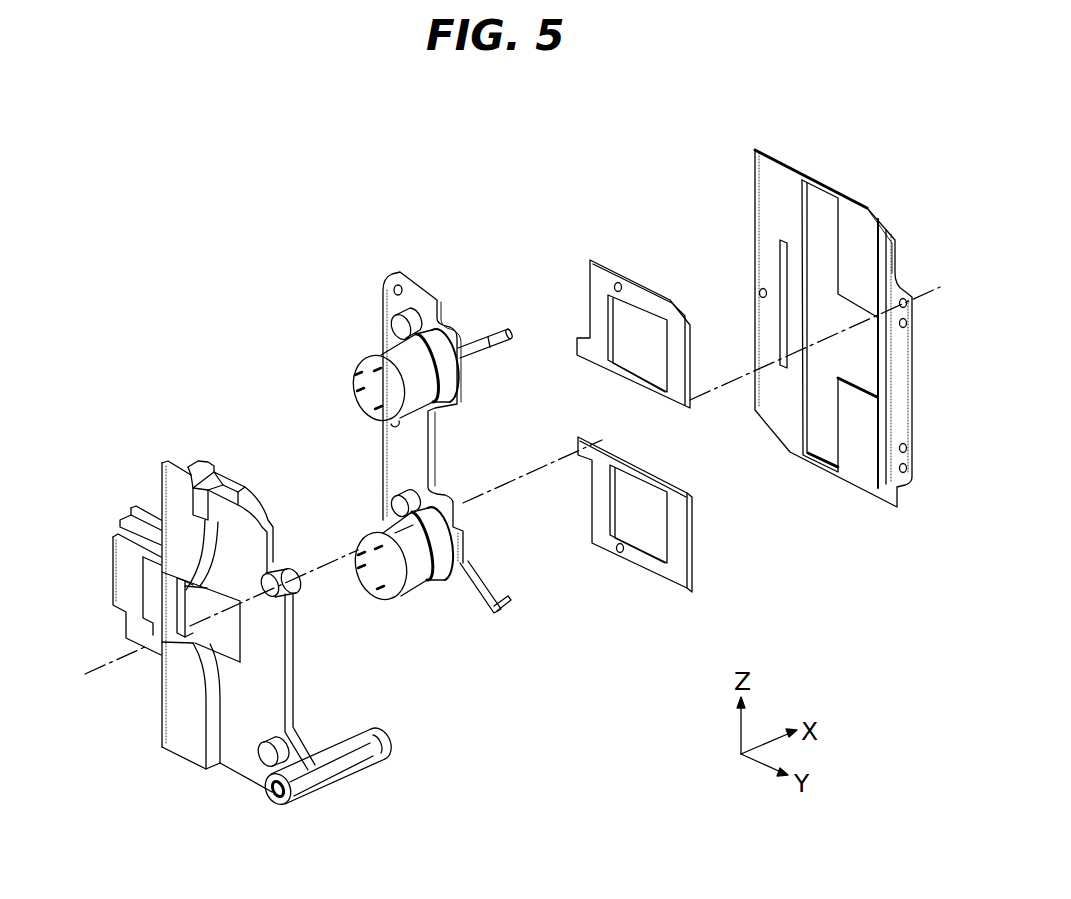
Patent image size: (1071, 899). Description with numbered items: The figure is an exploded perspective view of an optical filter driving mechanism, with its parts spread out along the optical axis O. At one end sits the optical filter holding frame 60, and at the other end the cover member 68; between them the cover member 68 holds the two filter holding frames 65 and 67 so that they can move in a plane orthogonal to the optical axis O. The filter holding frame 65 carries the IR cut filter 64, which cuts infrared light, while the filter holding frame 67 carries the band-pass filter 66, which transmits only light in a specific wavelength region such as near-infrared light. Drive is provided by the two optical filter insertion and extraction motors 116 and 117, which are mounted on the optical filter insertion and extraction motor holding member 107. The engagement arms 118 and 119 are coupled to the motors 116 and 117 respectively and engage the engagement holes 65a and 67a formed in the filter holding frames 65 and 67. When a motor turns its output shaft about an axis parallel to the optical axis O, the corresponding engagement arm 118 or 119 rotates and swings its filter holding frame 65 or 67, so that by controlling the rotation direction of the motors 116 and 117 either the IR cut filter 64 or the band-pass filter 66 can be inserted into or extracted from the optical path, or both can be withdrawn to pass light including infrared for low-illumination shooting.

The optical filter holding frame 60 is at (331, 787).
The IR cut filter 64 is at (627, 357).
The filter holding frame 65 is at (630, 314).
The engagement hole 65a is at (617, 281).
The band-pass filter 66 is at (653, 495).
The filter holding frame 67 is at (635, 532).
The engagement hole 67a is at (618, 554).
The cover member 68 is at (847, 480).
The optical filter insertion and extraction motor holding member 107 is at (383, 457).
The optical filter insertion and extraction motor 116 is at (367, 356).
The optical filter insertion and extraction motor 117 is at (405, 598).
The engagement arm 118 is at (500, 333).
The engagement arm 119 is at (503, 606).
The optical axis O is at (107, 664).